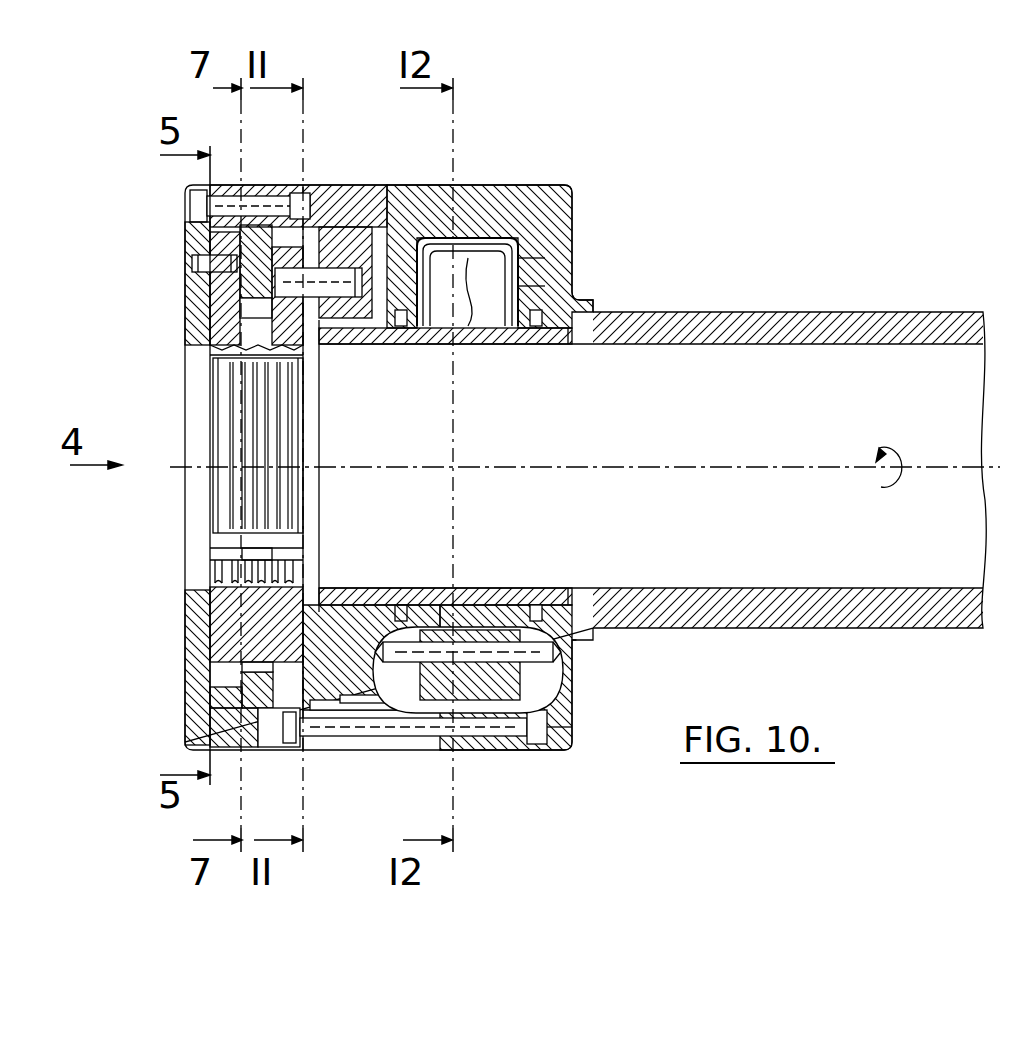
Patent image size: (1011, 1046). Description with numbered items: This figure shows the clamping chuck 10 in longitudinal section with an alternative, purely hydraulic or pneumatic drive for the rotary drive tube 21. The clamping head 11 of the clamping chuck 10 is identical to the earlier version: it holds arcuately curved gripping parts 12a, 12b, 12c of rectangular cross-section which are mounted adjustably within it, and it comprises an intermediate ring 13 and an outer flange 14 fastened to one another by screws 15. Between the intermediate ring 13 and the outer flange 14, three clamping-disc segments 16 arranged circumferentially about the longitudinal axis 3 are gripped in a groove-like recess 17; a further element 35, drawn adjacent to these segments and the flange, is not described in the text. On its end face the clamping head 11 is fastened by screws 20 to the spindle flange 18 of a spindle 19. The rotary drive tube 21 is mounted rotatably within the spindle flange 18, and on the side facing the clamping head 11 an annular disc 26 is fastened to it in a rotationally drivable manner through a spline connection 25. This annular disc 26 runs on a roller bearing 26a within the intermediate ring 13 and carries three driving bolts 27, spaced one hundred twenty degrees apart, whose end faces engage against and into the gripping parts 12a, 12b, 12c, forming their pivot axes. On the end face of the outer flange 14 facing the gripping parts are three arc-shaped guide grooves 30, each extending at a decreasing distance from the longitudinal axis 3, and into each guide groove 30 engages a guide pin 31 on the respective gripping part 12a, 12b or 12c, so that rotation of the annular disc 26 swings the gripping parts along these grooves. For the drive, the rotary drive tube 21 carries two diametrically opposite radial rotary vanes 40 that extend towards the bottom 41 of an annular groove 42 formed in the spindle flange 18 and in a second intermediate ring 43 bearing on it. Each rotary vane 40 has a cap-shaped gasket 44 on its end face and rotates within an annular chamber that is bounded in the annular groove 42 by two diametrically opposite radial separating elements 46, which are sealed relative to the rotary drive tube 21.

The longitudinal axis 3 is at (735, 470).
The clamping chuck 10 is at (76, 331).
The clamping head 11 is at (371, 108).
The gripping part 12a is at (215, 330).
The gripping part 12b is at (215, 389).
The gripping part 12c is at (215, 614).
The intermediate ring 13 is at (328, 205).
The outer flange 14 is at (195, 652).
The screws 15 is at (192, 205).
The clamping-disc segments 16 is at (276, 200).
The recess 17 is at (246, 200).
The spindle flange 18 is at (542, 222).
The spindle 19 is at (762, 312).
The screws 20 is at (282, 748).
The rotary drive tube 21 is at (470, 344).
The spline connection 25 is at (392, 718).
The annular disc 26 is at (360, 718).
The roller bearing 26a is at (340, 718).
The driving bolts 27 is at (345, 268).
The guide grooves 30 is at (192, 247).
The guide pin 31 is at (195, 265).
The ring 35 is at (240, 316).
The rotary vanes 40 is at (494, 250).
The bottom 41 is at (437, 235).
The annular groove 42 is at (530, 258).
The second intermediate ring 43 is at (464, 238).
The cap-shaped gasket 44 is at (530, 288).
The separating elements 46 is at (470, 700).